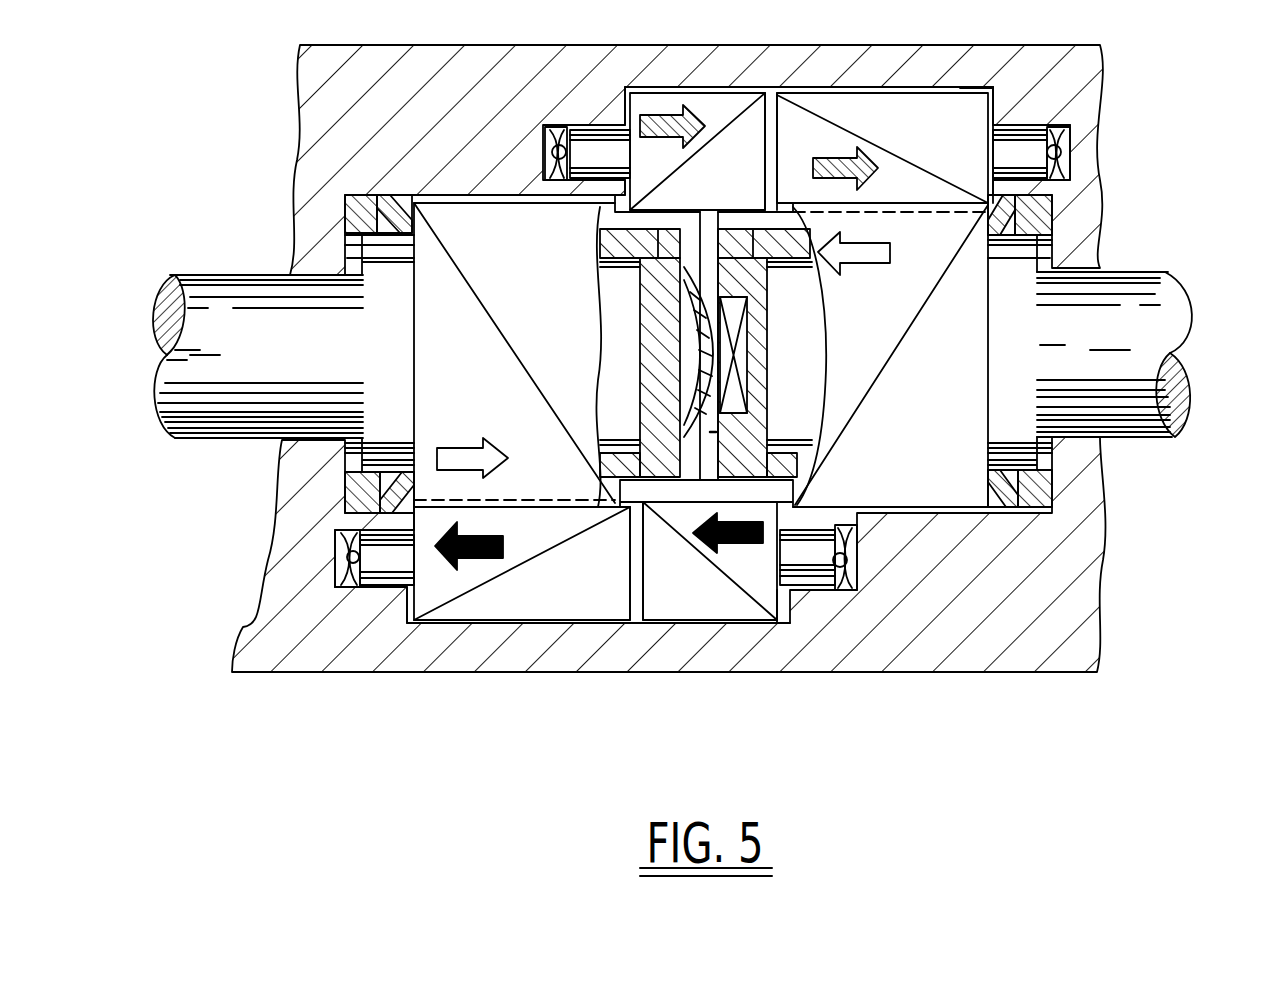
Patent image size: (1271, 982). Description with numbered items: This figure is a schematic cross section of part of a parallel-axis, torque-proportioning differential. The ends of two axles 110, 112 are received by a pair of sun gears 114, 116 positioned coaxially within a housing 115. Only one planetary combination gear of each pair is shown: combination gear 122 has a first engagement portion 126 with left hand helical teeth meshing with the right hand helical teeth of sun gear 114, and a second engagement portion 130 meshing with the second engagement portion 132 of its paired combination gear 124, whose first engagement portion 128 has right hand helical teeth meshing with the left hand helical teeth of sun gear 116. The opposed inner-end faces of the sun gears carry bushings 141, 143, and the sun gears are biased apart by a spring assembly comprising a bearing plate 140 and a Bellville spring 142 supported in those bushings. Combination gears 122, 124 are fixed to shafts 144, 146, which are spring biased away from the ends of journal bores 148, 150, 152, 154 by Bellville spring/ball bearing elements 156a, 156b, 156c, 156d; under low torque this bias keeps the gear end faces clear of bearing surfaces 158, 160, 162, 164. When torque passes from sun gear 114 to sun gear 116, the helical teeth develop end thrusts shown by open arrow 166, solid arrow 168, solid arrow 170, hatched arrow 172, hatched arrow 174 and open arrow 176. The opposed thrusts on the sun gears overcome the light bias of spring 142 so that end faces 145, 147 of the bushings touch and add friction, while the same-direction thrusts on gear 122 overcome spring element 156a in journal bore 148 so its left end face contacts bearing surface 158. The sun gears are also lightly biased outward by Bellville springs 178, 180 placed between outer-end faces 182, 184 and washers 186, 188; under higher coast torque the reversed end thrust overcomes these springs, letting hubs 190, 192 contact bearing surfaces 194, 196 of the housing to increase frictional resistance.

The axle 110 is at (160, 316).
The axle 112 is at (1180, 322).
The sun gear 114 is at (470, 354).
The housing 115 is at (405, 96).
The sun gear 116 is at (941, 414).
The combination gear 122 is at (366, 588).
The combination gear 124 is at (998, 108).
The first engagement portion 126 is at (530, 622).
The first engagement portion 128 is at (868, 108).
The second engagement portion 130 is at (708, 622).
The second engagement portion 132 is at (648, 104).
The bearing plate 140 is at (740, 358).
The bushing 141 is at (758, 312).
The Bellville spring 142 is at (698, 360).
The bushing 143 is at (688, 312).
The shaft 144 is at (803, 557).
The end face 145 is at (712, 431).
The shaft 146 is at (580, 145).
The end face 147 is at (712, 228).
The journal bore 148 is at (340, 572).
The journal bore 150 is at (858, 558).
The journal bore 152 is at (546, 152).
The journal bore 154 is at (1068, 147).
The Bellville spring/ball bearing element 156a is at (349, 556).
The Bellville spring/ball bearing element 156b is at (866, 574).
The Bellville spring/ball bearing element 156c is at (548, 170).
The Bellville spring/ball bearing element 156d is at (1072, 160).
The bearing surface 158 is at (410, 606).
The bearing surface 160 is at (774, 608).
The bearing surface 162 is at (624, 100).
The bearing surface 164 is at (967, 105).
The open arrow 166 is at (462, 443).
The solid arrow 168 is at (488, 524).
The solid arrow 170 is at (722, 542).
The hatched arrow 172 is at (668, 103).
The hatched arrow 174 is at (832, 160).
The open arrow 176 is at (857, 268).
The Bellville spring 178 is at (395, 205).
The Bellville spring 180 is at (972, 210).
The outer-end face 182 is at (414, 367).
The outer-end face 184 is at (992, 346).
The washer 186 is at (368, 498).
The washer 188 is at (1058, 472).
The hub 190 is at (352, 241).
The hub 192 is at (1055, 462).
The bearing surface 194 is at (348, 238).
The bearing surface 196 is at (1055, 490).